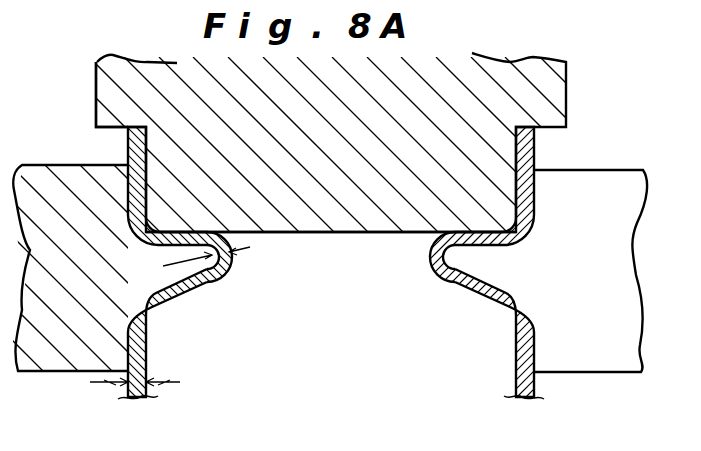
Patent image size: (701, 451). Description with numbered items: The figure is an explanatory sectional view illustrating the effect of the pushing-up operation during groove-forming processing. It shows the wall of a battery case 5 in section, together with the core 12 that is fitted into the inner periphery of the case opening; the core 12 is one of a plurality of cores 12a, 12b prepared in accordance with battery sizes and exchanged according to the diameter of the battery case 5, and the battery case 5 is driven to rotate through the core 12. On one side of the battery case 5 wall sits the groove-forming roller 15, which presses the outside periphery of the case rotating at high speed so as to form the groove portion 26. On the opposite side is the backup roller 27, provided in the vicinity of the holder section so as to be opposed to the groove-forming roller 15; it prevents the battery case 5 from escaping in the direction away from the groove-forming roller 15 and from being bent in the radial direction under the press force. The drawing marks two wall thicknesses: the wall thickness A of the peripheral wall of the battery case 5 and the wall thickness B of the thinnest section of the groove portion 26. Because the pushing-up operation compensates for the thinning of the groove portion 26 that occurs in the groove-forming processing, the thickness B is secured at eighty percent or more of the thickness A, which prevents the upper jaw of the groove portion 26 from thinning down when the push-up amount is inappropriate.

The core 12 is at (96, 88).
The core 12a is at (125, 100).
The core 12b is at (346, 215).
The battery case 5 is at (350, 263).
The groove portion 26 is at (203, 280).
The groove-forming roller 15 is at (60, 343).
The backup roller 27 is at (596, 195).
The wall thickness of the peripheral wall A is at (133, 400).
The wall thickness of the thinnest section B is at (236, 261).